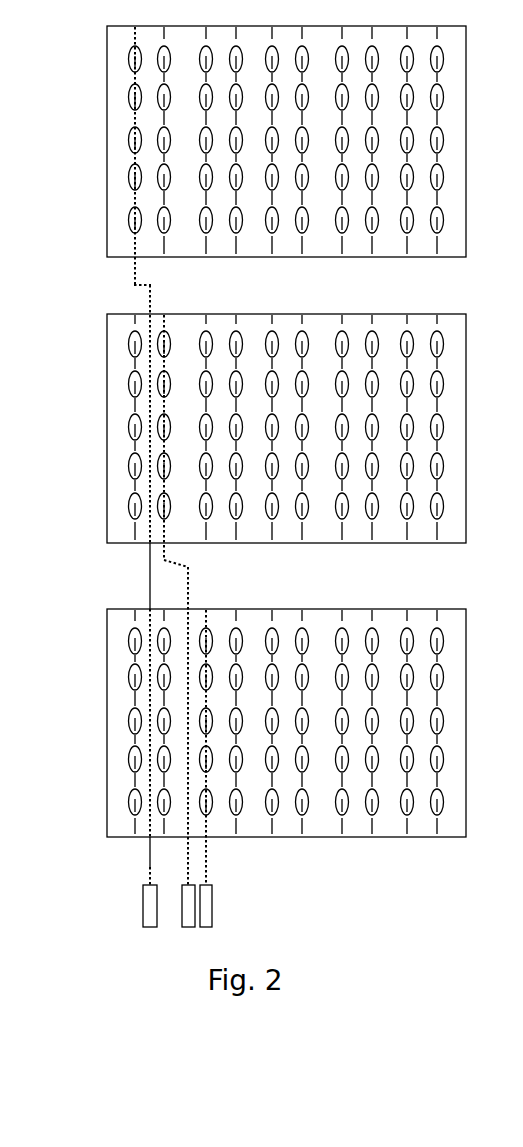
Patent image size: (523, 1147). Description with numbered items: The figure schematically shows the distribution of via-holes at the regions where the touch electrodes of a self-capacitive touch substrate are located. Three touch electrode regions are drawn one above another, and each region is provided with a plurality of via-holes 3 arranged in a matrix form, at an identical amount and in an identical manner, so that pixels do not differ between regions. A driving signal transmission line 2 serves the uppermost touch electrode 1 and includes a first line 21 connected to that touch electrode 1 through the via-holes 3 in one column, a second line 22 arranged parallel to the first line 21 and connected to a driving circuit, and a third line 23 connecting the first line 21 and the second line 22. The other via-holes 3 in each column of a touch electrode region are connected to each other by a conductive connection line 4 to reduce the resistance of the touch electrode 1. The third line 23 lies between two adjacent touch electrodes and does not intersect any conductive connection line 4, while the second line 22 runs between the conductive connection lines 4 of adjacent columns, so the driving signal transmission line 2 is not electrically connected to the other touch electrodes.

The touch electrode 1 is at (118, 207).
The driving signal transmission line 2 is at (150, 578).
The via-hole 3 is at (160, 635).
The conductive connection line 4 is at (163, 609).
The first line 21 is at (132, 267).
The second line 22 is at (152, 307).
The third line 23 is at (147, 286).